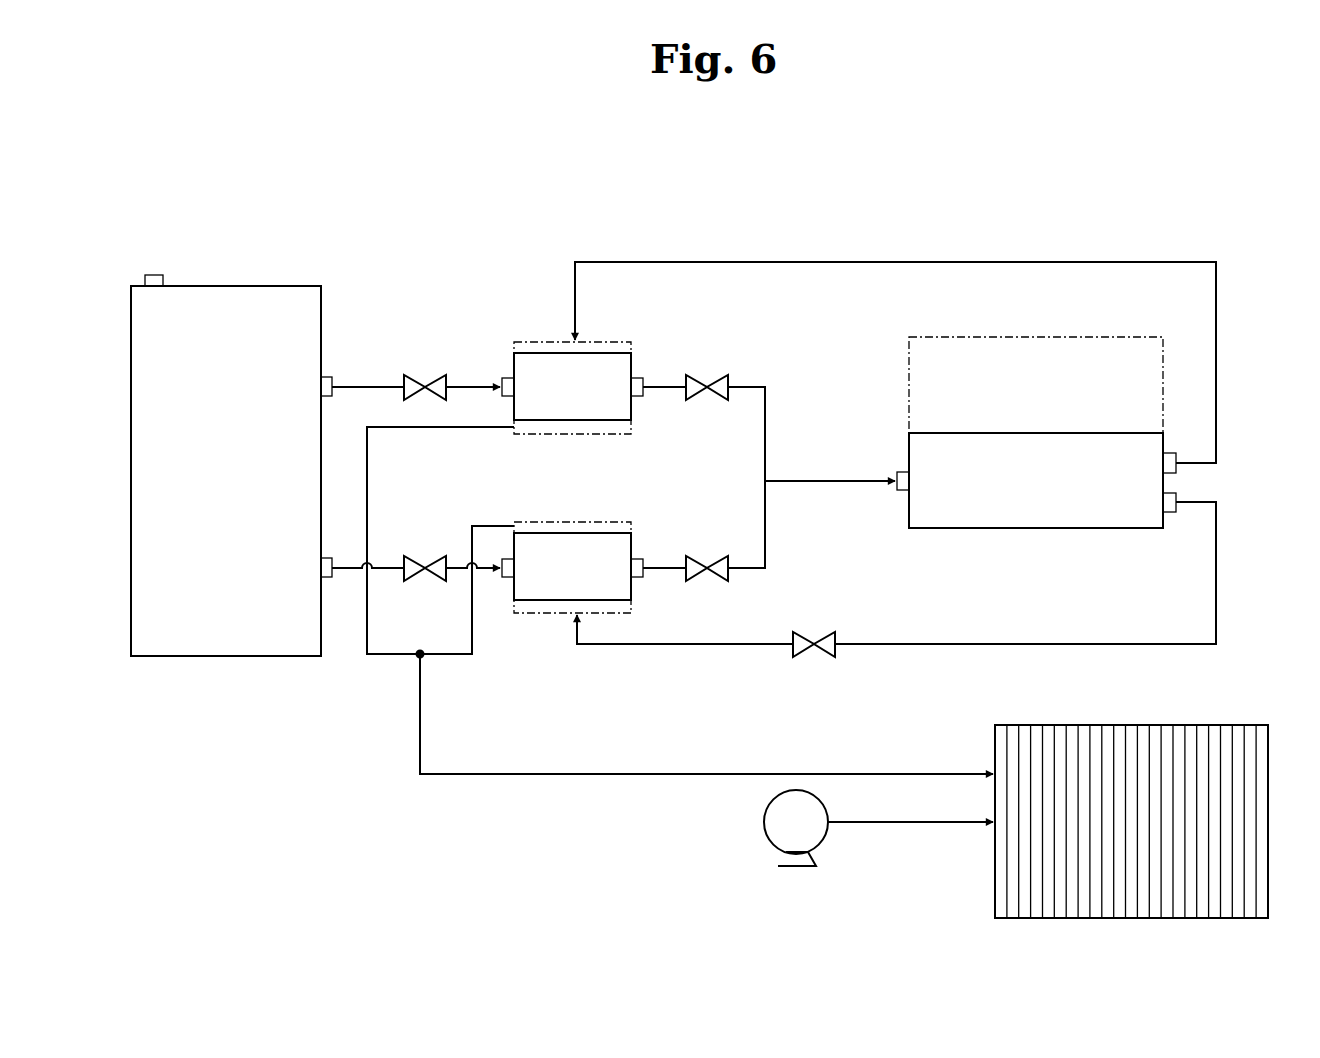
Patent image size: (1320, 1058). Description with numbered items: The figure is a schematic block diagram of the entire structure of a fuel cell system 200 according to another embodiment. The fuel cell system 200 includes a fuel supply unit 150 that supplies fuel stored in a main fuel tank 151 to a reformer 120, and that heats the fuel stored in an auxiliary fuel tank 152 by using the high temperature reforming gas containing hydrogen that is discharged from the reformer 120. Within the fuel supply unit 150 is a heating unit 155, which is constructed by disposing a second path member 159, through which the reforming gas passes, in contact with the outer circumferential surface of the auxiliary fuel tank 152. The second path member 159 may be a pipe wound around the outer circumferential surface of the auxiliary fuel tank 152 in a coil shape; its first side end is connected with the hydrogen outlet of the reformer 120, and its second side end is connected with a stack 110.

The fuel cell system 200 is at (708, 166).
The main fuel tank 151 is at (243, 270).
The fuel supply unit 150 is at (557, 417).
The auxiliary fuel tank 152 is at (611, 353).
The heating unit 155 is at (545, 340).
The second path member 159 is at (774, 519).
The reformer 120 is at (1045, 528).
The stack 110 is at (1214, 718).